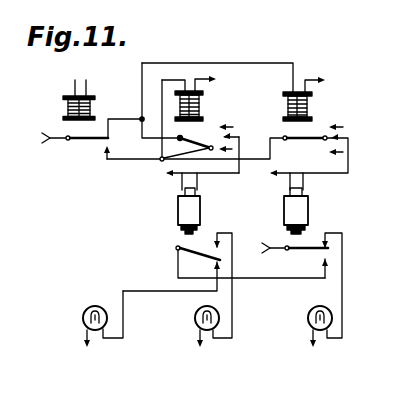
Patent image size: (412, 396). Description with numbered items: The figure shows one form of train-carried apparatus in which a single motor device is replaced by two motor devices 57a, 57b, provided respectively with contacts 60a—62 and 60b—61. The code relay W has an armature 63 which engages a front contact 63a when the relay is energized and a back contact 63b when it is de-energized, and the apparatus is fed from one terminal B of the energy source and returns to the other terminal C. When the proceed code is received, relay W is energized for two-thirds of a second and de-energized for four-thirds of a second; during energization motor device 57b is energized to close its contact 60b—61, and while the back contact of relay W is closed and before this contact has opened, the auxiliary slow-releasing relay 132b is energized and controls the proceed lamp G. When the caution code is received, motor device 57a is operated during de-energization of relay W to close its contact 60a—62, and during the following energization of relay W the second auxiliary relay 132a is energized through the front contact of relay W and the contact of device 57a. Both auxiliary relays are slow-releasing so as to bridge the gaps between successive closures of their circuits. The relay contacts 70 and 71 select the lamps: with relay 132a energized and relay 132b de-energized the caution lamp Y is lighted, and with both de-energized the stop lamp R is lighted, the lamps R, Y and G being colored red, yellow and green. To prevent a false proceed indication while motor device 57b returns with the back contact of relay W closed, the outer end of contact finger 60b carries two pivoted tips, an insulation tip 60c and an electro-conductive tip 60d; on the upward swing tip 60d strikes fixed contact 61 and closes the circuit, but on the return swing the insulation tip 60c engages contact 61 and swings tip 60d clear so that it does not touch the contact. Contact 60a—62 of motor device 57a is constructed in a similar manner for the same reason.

The relay W is at (66, 107).
The terminal of the energy source B is at (40, 139).
The terminal of the energy source C is at (199, 212).
The signal lamp R is at (98, 307).
The signal lamp Y is at (201, 310).
The signal lamp G is at (313, 308).
The motor device 57a is at (191, 82).
The motor device 57b is at (296, 92).
The contact finger 60a is at (160, 161).
The contact finger 60b is at (307, 140).
The insulation tip 60c is at (213, 154).
The electro-conductive tip 60d is at (214, 144).
The fixed contact 61 is at (336, 136).
The fixed contact 62 is at (228, 135).
The armature of relay W 63 is at (93, 141).
The front contact of relay W 63a is at (109, 132).
The back contact of relay W 63b is at (106, 161).
The contact of relay 132b 70 is at (315, 251).
The contact of relay 132a 71 is at (198, 260).
The auxiliary slow-releasing relay 132a is at (177, 216).
The auxiliary slow-releasing relay 132b is at (309, 213).